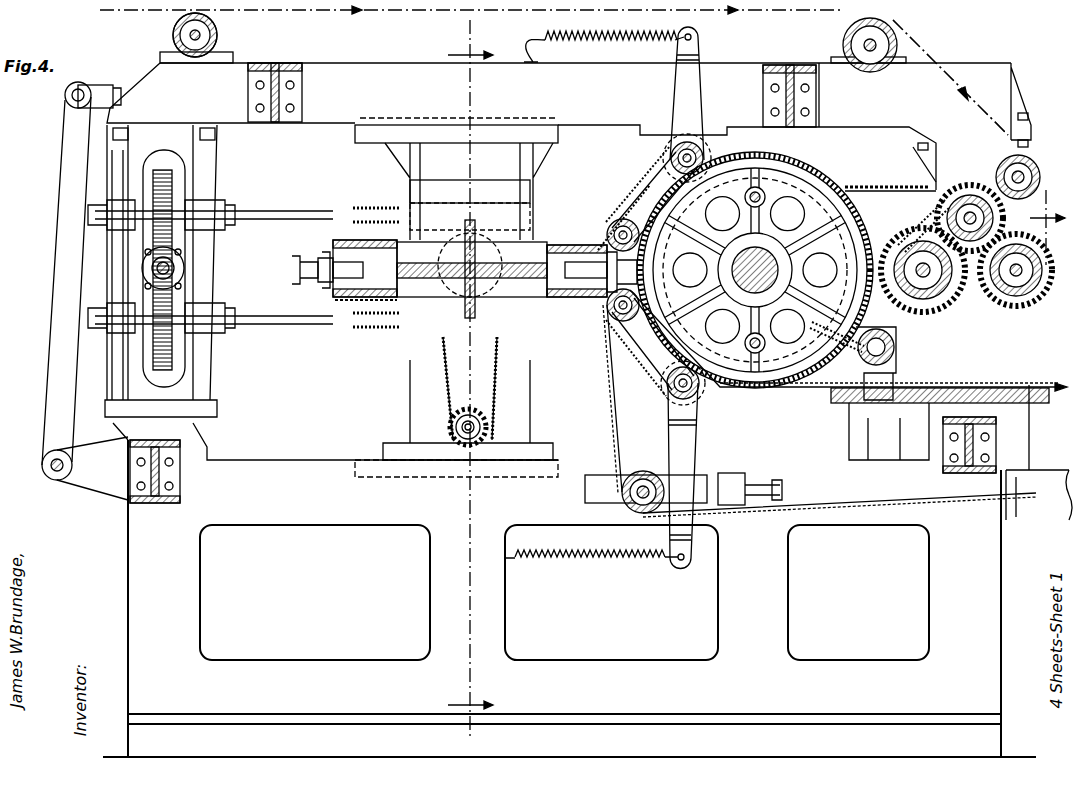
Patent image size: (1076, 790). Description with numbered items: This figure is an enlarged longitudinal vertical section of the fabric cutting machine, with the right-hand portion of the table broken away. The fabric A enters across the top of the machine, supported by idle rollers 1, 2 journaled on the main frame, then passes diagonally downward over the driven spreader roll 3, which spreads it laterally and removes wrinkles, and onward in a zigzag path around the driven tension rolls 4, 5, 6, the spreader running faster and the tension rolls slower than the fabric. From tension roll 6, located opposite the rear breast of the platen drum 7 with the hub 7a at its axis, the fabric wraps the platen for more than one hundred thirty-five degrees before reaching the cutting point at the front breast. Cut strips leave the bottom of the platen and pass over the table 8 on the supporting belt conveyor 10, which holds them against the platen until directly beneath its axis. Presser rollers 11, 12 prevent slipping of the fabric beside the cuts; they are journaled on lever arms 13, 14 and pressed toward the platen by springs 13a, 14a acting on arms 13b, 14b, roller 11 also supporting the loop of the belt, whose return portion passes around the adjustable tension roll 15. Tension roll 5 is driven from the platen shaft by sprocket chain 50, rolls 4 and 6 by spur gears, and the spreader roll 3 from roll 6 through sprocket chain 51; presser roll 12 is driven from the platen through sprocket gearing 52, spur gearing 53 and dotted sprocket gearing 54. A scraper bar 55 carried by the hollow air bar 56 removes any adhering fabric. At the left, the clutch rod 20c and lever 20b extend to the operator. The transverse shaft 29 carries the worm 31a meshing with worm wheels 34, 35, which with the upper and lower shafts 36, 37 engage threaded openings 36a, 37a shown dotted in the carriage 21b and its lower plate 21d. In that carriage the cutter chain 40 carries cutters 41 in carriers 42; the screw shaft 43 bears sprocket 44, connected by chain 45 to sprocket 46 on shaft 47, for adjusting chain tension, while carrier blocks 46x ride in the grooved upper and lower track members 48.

The idle roller 1 is at (173, 30).
The idle roller 2 is at (843, 36).
The spreader roll 3 is at (1033, 166).
The tension roll 4 is at (1020, 300).
The tension roll 5 is at (762, 388).
The tension roll 6 is at (937, 305).
The platen drum 7 is at (760, 270).
The hub of drive wheel 7a is at (748, 258).
The table 8 is at (975, 386).
The supporting belt conveyor 10 is at (612, 418).
The presser roller 11 is at (612, 314).
The presser roller 12 is at (612, 228).
The lever arm 13 is at (650, 340).
The spring 13a is at (600, 562).
The arm 13b is at (690, 450).
The lever arm 14 is at (655, 195).
The spring 14a is at (590, 48).
The arm 14b is at (700, 80).
The adjustable tension roll 15 is at (646, 472).
The lever 20b is at (60, 292).
The rod 20c is at (100, 108).
The carriage 21b is at (410, 178).
The lower frame plate 21d is at (402, 300).
The shaft 29 is at (172, 272).
The worm 31a is at (180, 262).
The worm wheel 34 is at (160, 172).
The worm wheel 35 is at (160, 365).
The upper shaft 36 is at (276, 210).
The threaded opening 36a is at (476, 208).
The lower shaft 37 is at (268, 311).
The threaded opening 37a is at (470, 345).
The chain 40 is at (345, 240).
The cutter 41 is at (300, 272).
The carrier 42 is at (318, 260).
The screw shaft 43 is at (530, 200).
The sprocket 44 is at (440, 240).
The chain 45 is at (440, 377).
The sprocket 46 is at (447, 422).
The carrier block 46x is at (342, 300).
The shaft 47 is at (468, 432).
The track member 48 is at (552, 244).
The sprocket chain 50 is at (866, 186).
The sprocket chain 51 is at (990, 192).
The sprocket gearing 52 is at (657, 145).
The spur gearing 53 is at (628, 188).
The sprocket gearing 54 is at (820, 190).
The scraper bar 55 is at (845, 357).
The hollow bar 56 is at (890, 349).
The fabric A is at (955, 62).